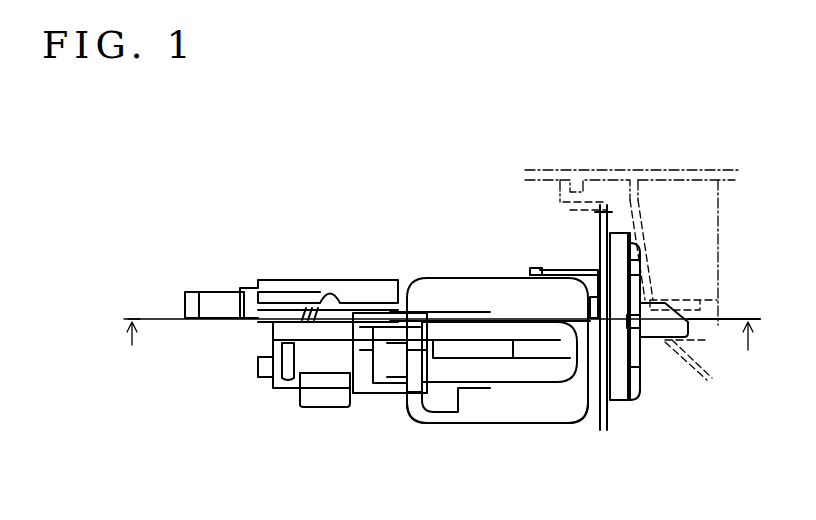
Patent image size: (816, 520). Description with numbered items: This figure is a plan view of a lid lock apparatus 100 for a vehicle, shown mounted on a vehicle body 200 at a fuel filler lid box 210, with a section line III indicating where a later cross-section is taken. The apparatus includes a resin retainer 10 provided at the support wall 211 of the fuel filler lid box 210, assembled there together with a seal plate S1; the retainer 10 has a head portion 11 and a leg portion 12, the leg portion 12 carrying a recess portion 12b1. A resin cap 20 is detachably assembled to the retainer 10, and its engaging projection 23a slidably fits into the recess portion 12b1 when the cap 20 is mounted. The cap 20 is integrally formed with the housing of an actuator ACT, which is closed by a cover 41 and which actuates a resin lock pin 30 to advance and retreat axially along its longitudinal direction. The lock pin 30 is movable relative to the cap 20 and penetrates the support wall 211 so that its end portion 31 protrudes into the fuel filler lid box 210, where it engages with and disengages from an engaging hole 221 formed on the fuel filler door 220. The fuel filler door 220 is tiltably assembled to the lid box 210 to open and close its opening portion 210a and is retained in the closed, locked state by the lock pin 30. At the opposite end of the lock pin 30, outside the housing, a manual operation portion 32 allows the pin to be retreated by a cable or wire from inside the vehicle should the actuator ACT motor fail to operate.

The lid lock apparatus 100 is at (426, 434).
The retainer 10 is at (630, 412).
The head portion 11 is at (640, 268).
The leg portion 12 is at (582, 270).
The recess portion 12b1 is at (540, 268).
The cap 20 is at (582, 298).
The engaging projection 23a is at (530, 273).
The lock pin 30 is at (660, 350).
The end portion 31 is at (684, 316).
The manual operation portion 32 is at (216, 292).
The cover 41 is at (530, 424).
The actuator ACT is at (365, 410).
The seal plate S1 is at (628, 212).
The vehicle body 200 is at (663, 160).
The fuel filler lid box 210 is at (545, 170).
The opening portion 210a is at (580, 180).
The support wall 211 is at (596, 222).
The fuel filler door 220 is at (712, 172).
The engaging hole 221 is at (700, 300).
The section line III- III is at (439, 356).